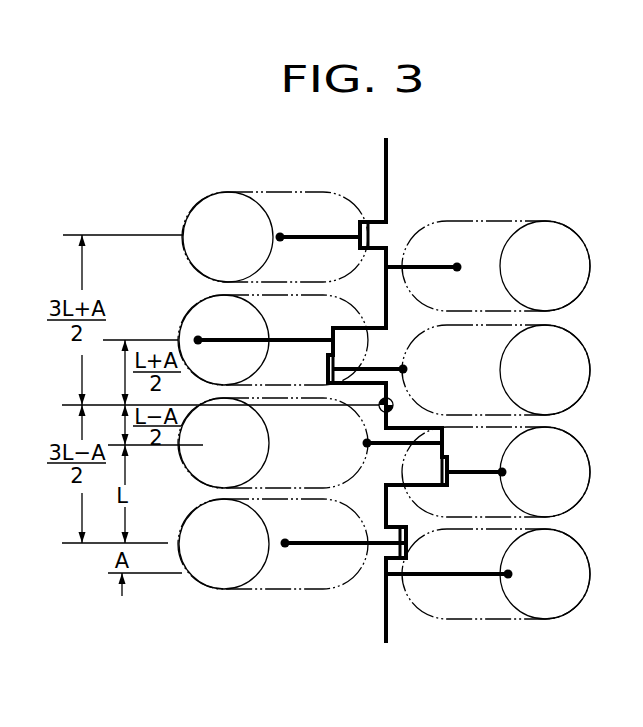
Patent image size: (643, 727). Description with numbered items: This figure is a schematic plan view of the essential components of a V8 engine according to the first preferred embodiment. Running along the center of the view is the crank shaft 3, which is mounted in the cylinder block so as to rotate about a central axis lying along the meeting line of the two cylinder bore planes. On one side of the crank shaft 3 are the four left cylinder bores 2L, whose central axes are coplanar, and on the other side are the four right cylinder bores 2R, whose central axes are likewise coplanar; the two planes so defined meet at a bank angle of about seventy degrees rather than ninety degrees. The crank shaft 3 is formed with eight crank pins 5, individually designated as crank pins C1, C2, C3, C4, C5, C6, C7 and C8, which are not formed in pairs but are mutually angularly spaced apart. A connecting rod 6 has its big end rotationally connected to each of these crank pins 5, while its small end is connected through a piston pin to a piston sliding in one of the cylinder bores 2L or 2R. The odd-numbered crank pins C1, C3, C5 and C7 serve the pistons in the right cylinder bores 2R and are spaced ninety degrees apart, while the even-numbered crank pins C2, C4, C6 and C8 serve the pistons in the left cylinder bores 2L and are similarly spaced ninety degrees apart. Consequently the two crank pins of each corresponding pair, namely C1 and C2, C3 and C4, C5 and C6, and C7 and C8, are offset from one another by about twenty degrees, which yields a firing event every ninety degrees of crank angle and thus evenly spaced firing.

The crank shaft 3 is at (388, 183).
The crank pins 5 is at (388, 391).
The connecting rod 6 is at (353, 389).
The left cylinder bores 2L is at (259, 399).
The right cylinder bores 2R is at (513, 410).
The crank pin C1 is at (385, 572).
The crank pin C2 is at (372, 540).
The crank pin C3 is at (450, 481).
The crank pin C4 is at (445, 430).
The crank pin C5 is at (327, 379).
The crank pin C6 is at (336, 347).
The crank pin C7 is at (386, 259).
The crank pin C8 is at (368, 221).